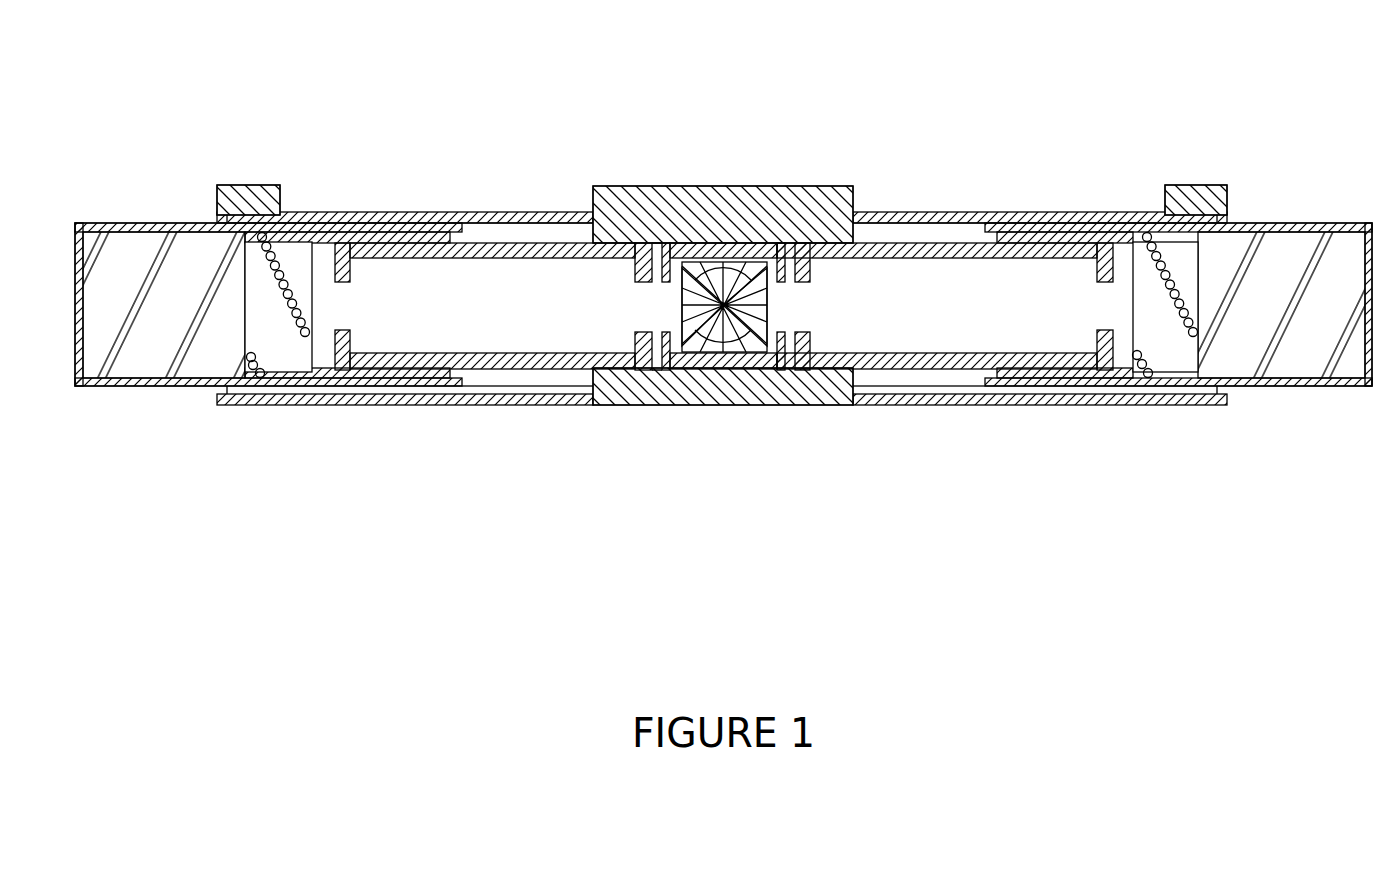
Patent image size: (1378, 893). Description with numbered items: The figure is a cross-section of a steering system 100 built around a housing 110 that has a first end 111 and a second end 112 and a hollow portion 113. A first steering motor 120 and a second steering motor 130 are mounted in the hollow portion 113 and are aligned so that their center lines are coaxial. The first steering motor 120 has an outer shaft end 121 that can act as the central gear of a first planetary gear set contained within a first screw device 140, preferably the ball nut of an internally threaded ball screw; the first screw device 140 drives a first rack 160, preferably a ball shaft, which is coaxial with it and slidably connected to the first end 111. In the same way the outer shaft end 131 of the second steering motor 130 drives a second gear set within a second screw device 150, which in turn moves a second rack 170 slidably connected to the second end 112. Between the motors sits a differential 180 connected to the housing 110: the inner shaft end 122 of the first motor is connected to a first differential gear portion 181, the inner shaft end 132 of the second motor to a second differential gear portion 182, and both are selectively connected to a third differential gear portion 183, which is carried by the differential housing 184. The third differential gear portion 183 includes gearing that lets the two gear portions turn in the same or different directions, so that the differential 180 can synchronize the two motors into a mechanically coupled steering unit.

The steering system 100 is at (135, 31).
The housing 110 is at (728, 186).
The first end 111 is at (215, 199).
The second end 112 is at (1230, 199).
The hollow portion 113 is at (873, 407).
The first steering motor 120 is at (487, 302).
The first steering motor outer shaft end 121 is at (323, 307).
The inner shaft end 122 is at (667, 307).
The second steering motor 130 is at (1040, 277).
The second steering motor outer shaft end 131 is at (1120, 307).
The inner shaft end 132 is at (782, 307).
The first screw device 140 is at (290, 260).
The second screw device 150 is at (1180, 260).
The first rack 160 is at (185, 388).
The second rack 170 is at (1262, 388).
The differential 180 is at (753, 348).
The first differential gear portion 181 is at (695, 287).
The second differential gear portion 182 is at (753, 287).
The third differential gear portion 183 is at (720, 278).
The differential housing 184 is at (727, 350).